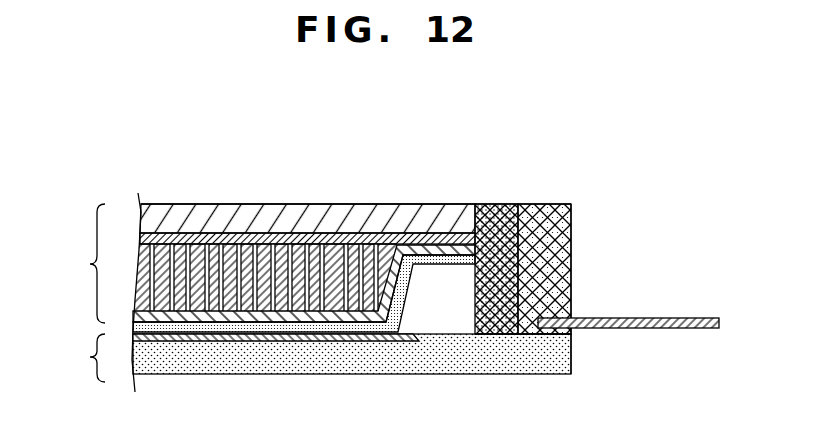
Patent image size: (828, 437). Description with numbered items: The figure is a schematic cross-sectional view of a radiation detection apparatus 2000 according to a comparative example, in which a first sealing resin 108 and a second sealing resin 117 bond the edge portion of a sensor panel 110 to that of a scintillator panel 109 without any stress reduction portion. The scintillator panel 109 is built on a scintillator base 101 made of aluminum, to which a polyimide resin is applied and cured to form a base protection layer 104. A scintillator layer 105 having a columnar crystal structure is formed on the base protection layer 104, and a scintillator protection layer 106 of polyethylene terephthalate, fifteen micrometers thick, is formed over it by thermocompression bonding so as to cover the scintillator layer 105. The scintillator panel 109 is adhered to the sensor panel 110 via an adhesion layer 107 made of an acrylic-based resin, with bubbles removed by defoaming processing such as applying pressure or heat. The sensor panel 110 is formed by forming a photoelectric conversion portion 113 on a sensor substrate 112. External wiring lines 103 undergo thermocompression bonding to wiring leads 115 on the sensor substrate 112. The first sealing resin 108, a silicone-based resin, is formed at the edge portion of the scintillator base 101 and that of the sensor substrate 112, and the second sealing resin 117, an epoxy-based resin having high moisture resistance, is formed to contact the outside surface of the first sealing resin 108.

The radiation detection apparatus 2000 is at (344, 131).
The scintillator base 101 is at (178, 208).
The external wiring lines 103 is at (660, 325).
The base protection layer 104 is at (232, 238).
The scintillator layer 105 is at (296, 253).
The scintillator protection layer 106 is at (388, 248).
The adhesion layer 107 is at (435, 258).
The first sealing resin 108 is at (500, 204).
The scintillator panel 109 is at (78, 263).
The sensor panel 110 is at (78, 358).
The sensor substrate 112 is at (202, 363).
The photoelectric conversion portion 113 is at (290, 335).
The wiring leads 115 is at (550, 334).
The second sealing resin 117 is at (555, 204).